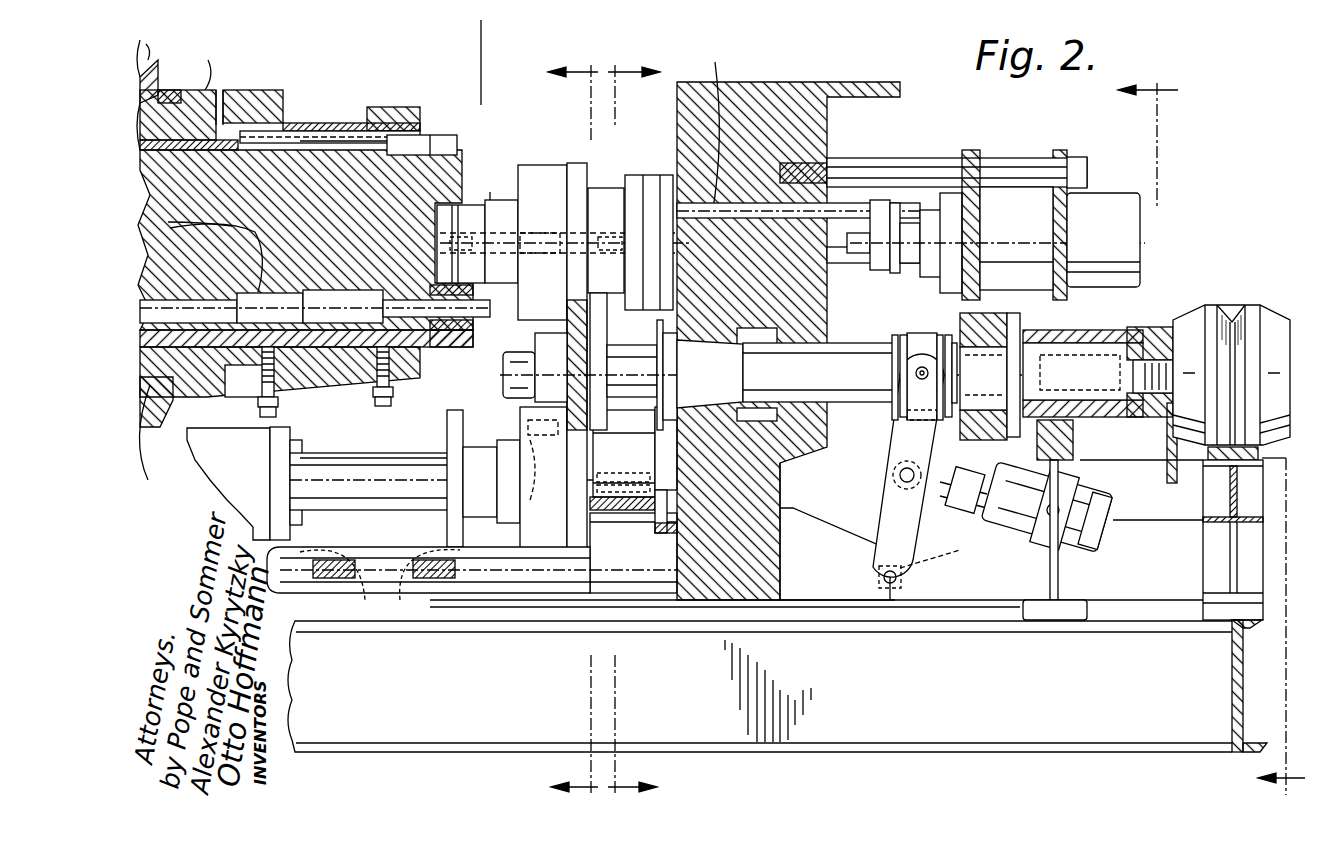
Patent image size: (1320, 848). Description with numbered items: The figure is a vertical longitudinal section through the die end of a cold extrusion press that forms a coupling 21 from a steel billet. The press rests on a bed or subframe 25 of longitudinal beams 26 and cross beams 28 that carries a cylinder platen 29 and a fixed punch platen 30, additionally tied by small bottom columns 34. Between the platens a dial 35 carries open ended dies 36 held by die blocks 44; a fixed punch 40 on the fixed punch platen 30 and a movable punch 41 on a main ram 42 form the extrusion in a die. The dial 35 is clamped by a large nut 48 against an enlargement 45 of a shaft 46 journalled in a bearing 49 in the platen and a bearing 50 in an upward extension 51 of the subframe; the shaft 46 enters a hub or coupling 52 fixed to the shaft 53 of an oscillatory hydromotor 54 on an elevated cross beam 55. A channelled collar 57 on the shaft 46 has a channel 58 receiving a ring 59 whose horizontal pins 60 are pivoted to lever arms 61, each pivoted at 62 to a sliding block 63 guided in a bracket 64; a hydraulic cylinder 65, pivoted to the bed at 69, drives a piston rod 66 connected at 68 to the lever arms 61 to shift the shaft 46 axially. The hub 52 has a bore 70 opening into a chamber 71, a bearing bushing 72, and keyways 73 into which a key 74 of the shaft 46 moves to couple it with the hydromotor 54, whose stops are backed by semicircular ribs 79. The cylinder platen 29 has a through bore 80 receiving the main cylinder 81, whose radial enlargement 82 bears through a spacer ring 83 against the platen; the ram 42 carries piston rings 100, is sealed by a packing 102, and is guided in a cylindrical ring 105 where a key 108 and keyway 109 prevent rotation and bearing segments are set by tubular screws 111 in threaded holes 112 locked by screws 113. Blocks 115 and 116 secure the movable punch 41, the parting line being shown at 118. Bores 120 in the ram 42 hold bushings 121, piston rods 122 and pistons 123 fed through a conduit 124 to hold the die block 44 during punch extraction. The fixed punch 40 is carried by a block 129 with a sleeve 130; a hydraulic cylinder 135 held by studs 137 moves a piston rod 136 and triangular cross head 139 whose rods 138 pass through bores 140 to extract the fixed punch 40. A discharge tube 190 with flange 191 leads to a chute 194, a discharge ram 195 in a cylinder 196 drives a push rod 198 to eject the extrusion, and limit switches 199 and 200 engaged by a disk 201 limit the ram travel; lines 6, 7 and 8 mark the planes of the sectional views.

The coupling 21 is at (541, 232).
The bed or subframe 25 is at (907, 744).
The longitudinal beams 26 is at (1097, 743).
The cross beams 28 is at (1232, 688).
The cylinder platen 29 is at (157, 43).
The fixed punch platen 30 is at (812, 80).
The bottom columns 34 is at (476, 582).
The dial 35 is at (575, 163).
The dies 36 is at (470, 205).
The fixed punch 40 is at (605, 188).
The movable punch 41 is at (505, 200).
The main ram 42 is at (198, 186).
The die block 44 is at (540, 165).
The enlargement 45 is at (598, 345).
The shaft 46 is at (806, 357).
The large nut 48 is at (500, 380).
The bearing 49 is at (722, 357).
The bearing 50 is at (988, 380).
The upward extension 51 is at (1013, 375).
The hub or coupling 52 is at (1138, 327).
The shaft 53 is at (1155, 327).
The hydromotor 54 is at (1262, 305).
The elevated cross beam 55 is at (1228, 490).
The side plate 57 is at (950, 335).
The rocker head 58 is at (907, 340).
The ring 59 is at (897, 335).
The horizontal pins 60 is at (916, 372).
The lever arm 61 is at (892, 497).
The pivot 62 is at (900, 578).
The sliding block 63 is at (936, 556).
The bracket 64 is at (806, 517).
The hydraulic cylinder 65 is at (1092, 538).
The piston rod 66 is at (962, 502).
The pivotal connection 68 is at (900, 470).
The pivotal mounting 69 is at (1032, 530).
The bore 70 is at (1060, 330).
The enlarged chamber 71 is at (1100, 330).
The bearing bushing 72 is at (1038, 327).
The keyways 73 is at (1066, 327).
The key 74 is at (1103, 425).
The semicircular ribs 79 is at (1042, 300).
The horizontal through bore 80 is at (168, 400).
The main cylinder 81 is at (147, 433).
The radial enlargement 82 is at (204, 58).
The spacer ring 83 is at (174, 90).
The piston rings 100 is at (298, 390).
The packing 102 is at (250, 90).
The cylindrical extension or ring 105 is at (310, 131).
The key 108 is at (440, 107).
The keyway 109 is at (343, 131).
The tubular screw 111 is at (258, 395).
The threaded hole 112 is at (225, 395).
The screw 113 is at (280, 400).
The block 115 is at (490, 192).
The block 116 is at (457, 155).
The dot-dash line 118 is at (483, 40).
The cylinders or bores 120 is at (168, 222).
The bearing bushing 121 is at (450, 348).
The piston rod 122 is at (495, 326).
The piston 123 is at (364, 306).
The conduit 124 is at (200, 238).
The circular block 129 is at (657, 175).
The cylindrical sleeve 130 is at (630, 187).
The hydraulic cylinder 135 is at (1107, 193).
The piston rod 136 is at (912, 223).
The studs 137 is at (838, 158).
The rods 138 is at (780, 203).
The triangular cross head 139 is at (880, 200).
The bores 140 is at (701, 129).
The discharge tube 190 is at (600, 515).
The flange 191 is at (663, 535).
The chute 194 is at (640, 520).
The discharge ram 195 is at (372, 498).
The cylinder 196 is at (254, 447).
The push rod 198 is at (525, 425).
The limit switch 199 is at (358, 598).
The limit switch 200 is at (405, 596).
The disk 201 is at (448, 468).
The section line 6- 6 is at (1211, 440).
The section line 7- 7 is at (634, 428).
The section line 8- 8 is at (573, 428).